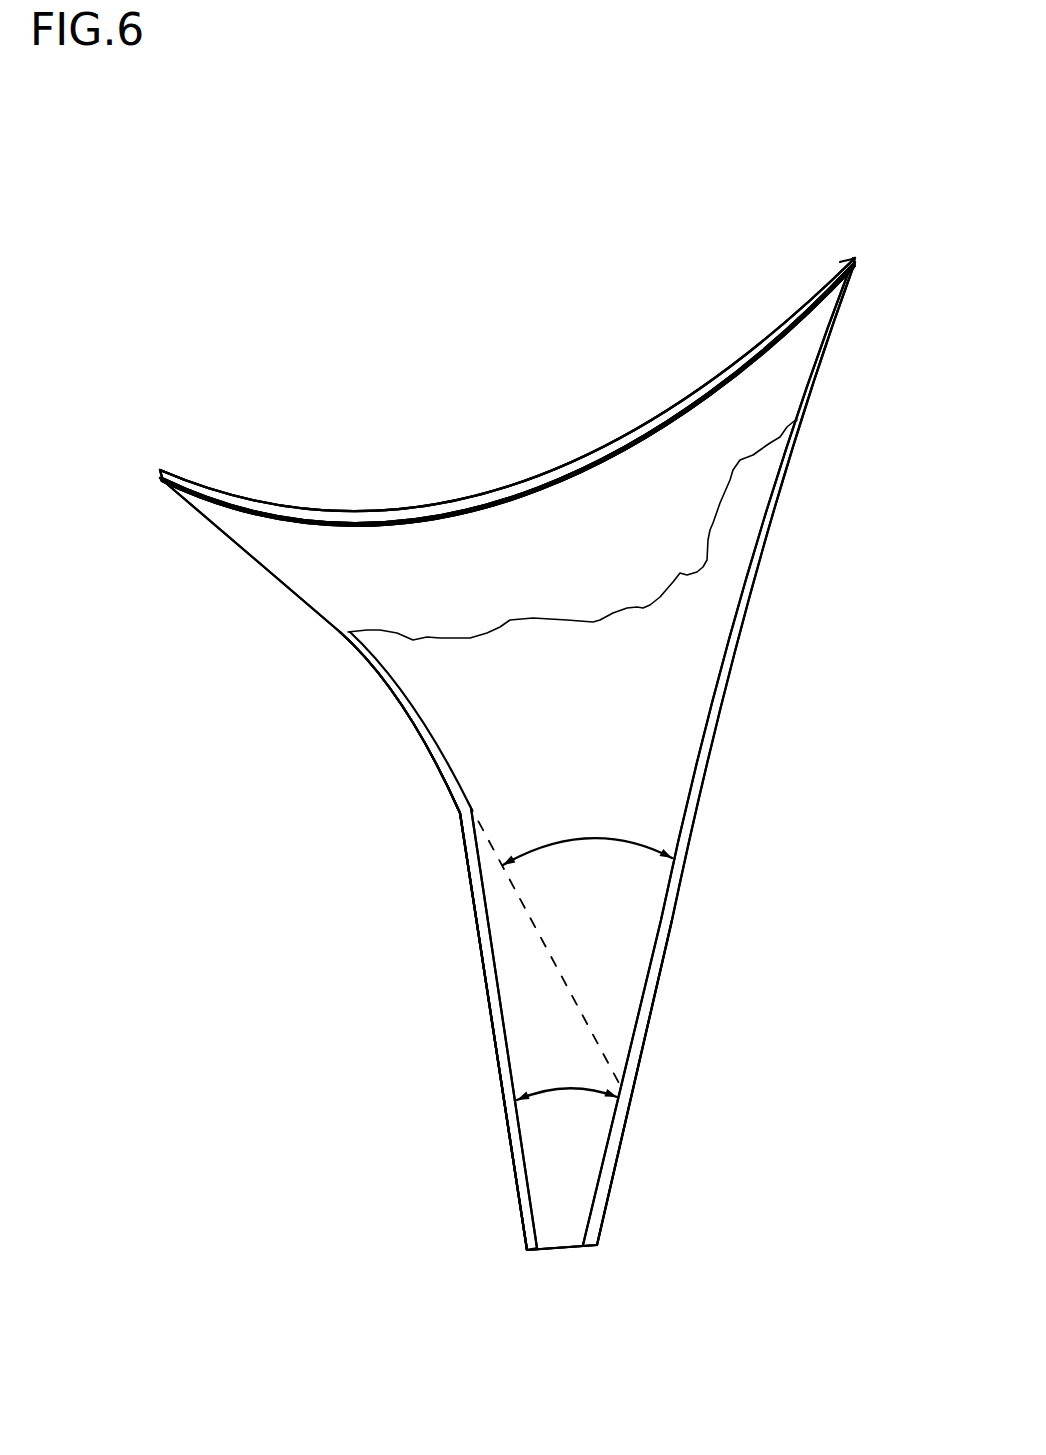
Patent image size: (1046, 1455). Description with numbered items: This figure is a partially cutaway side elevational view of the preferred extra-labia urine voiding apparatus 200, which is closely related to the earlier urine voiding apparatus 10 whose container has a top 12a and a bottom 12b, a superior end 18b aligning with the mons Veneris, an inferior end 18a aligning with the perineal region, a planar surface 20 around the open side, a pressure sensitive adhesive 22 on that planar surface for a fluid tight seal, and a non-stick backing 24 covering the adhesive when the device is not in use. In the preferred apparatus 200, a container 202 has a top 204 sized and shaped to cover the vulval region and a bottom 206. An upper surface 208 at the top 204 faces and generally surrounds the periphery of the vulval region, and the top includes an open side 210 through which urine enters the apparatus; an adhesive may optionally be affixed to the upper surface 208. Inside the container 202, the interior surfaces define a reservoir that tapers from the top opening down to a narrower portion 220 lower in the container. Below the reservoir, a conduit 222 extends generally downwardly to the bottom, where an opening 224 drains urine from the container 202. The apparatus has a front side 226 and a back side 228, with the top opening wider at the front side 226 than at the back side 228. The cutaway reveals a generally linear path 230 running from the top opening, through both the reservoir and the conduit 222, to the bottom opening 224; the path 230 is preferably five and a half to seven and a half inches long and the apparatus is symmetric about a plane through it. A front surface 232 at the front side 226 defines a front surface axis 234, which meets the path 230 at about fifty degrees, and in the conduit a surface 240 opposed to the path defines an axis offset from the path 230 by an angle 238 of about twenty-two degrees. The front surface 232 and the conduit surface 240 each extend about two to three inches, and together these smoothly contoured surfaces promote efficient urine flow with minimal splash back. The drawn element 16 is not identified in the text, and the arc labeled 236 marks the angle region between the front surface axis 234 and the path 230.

The urine voiding apparatus 10 is at (780, 735).
The top 12a is at (247, 545).
The bottom 12b is at (690, 845).
The crotch portion 16 is at (510, 1158).
The inferior end 18a is at (845, 257).
The superior end 18b is at (178, 473).
The planar surface 20 is at (747, 368).
The pressure sensitive adhesive 22 is at (718, 382).
The non-stick backing 24 is at (775, 325).
The extra-labia urine voiding apparatus 200 is at (378, 895).
The container 202 is at (413, 728).
The top 204 is at (159, 474).
The bottom 206 is at (527, 1251).
The upper surface 208 is at (610, 430).
The open side 210 is at (500, 490).
The narrower portion 220 is at (447, 793).
The conduit 222 is at (490, 1035).
The opening 224 is at (556, 1250).
The front side 226 is at (162, 469).
The back side 228 is at (846, 255).
The generally linear path 230 is at (712, 703).
The front surface 232 is at (415, 712).
The front surface axis 234 is at (527, 912).
The first angle 236 is at (578, 838).
The angle 238 is at (570, 1087).
The conduit surface 240 is at (500, 998).